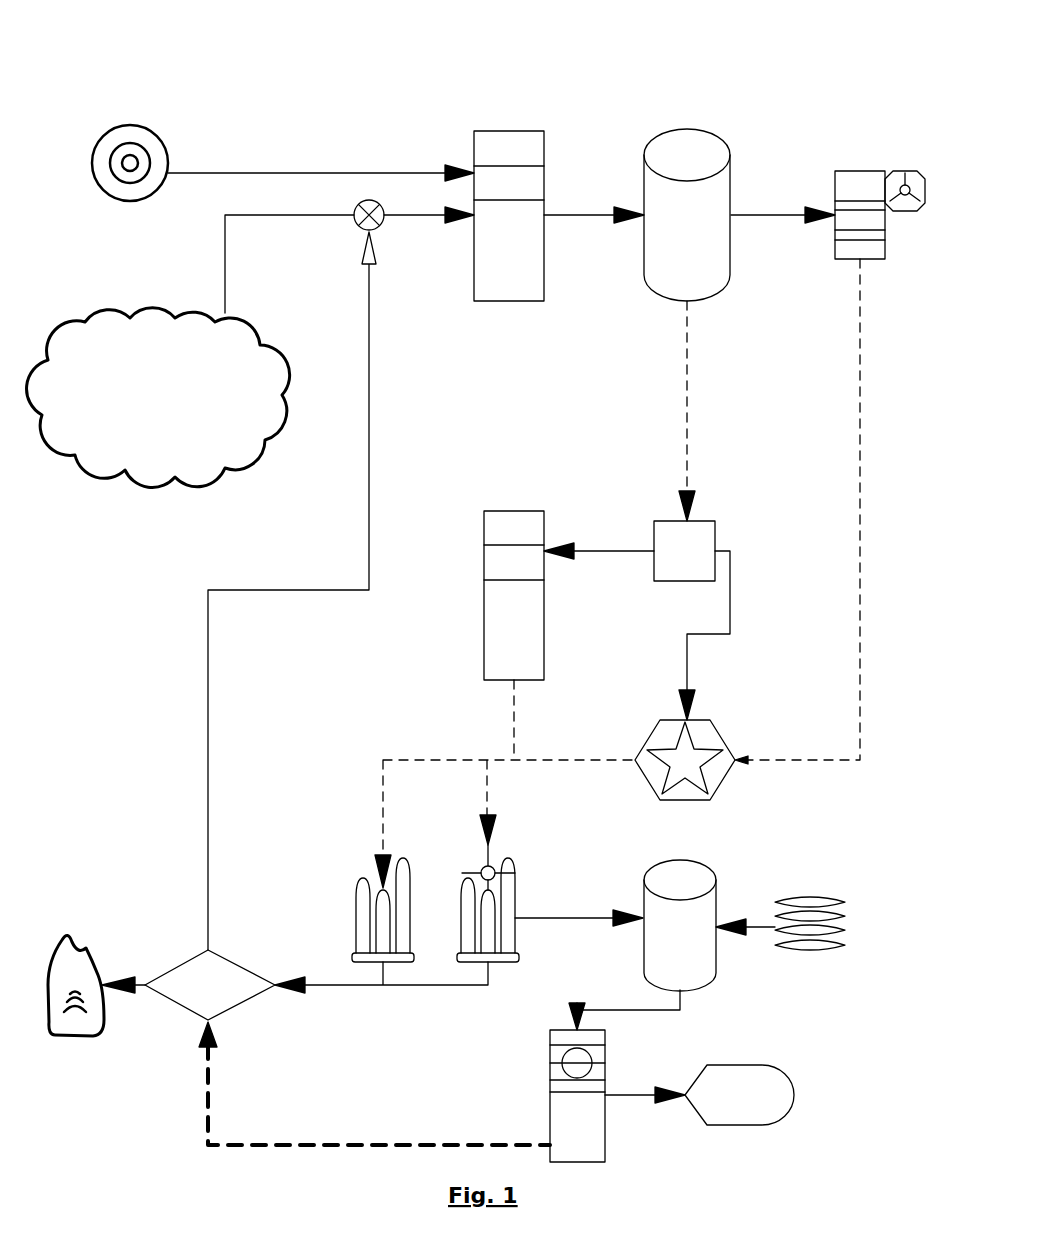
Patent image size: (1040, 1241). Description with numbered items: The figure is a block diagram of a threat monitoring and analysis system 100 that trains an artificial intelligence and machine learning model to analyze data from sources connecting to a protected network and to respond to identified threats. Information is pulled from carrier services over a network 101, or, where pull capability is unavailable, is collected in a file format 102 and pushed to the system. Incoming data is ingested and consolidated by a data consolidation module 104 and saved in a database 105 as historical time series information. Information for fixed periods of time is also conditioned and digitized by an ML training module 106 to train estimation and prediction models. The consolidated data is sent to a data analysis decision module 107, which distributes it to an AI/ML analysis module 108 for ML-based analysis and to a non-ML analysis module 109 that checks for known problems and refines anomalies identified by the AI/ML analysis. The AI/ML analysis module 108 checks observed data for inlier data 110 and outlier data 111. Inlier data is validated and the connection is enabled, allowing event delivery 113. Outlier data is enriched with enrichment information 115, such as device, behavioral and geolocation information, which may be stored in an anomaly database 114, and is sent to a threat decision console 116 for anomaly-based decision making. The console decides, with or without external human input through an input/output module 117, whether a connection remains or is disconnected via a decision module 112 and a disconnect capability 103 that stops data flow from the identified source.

The threat monitoring and analysis system 100 is at (507, 57).
The network 101 is at (99, 305).
The file format 102 is at (128, 122).
The disconnect capability 103 is at (385, 235).
The data consolidation module 104 is at (552, 299).
The database 105 is at (742, 273).
The ML training module 106 is at (893, 265).
The data analysis decision module 107 is at (703, 514).
The AI/ML analysis module 108 is at (711, 715).
The non-ML analysis module 109 is at (552, 605).
The inlier data 110 is at (354, 915).
The outlier data 111 is at (520, 872).
The decision module 112 is at (266, 997).
The event delivery 113 is at (114, 1027).
The anomaly database 114 is at (722, 957).
The enrichment information 115 is at (794, 893).
The threat decision console 116 is at (544, 1128).
The input/output module 117 is at (768, 1067).